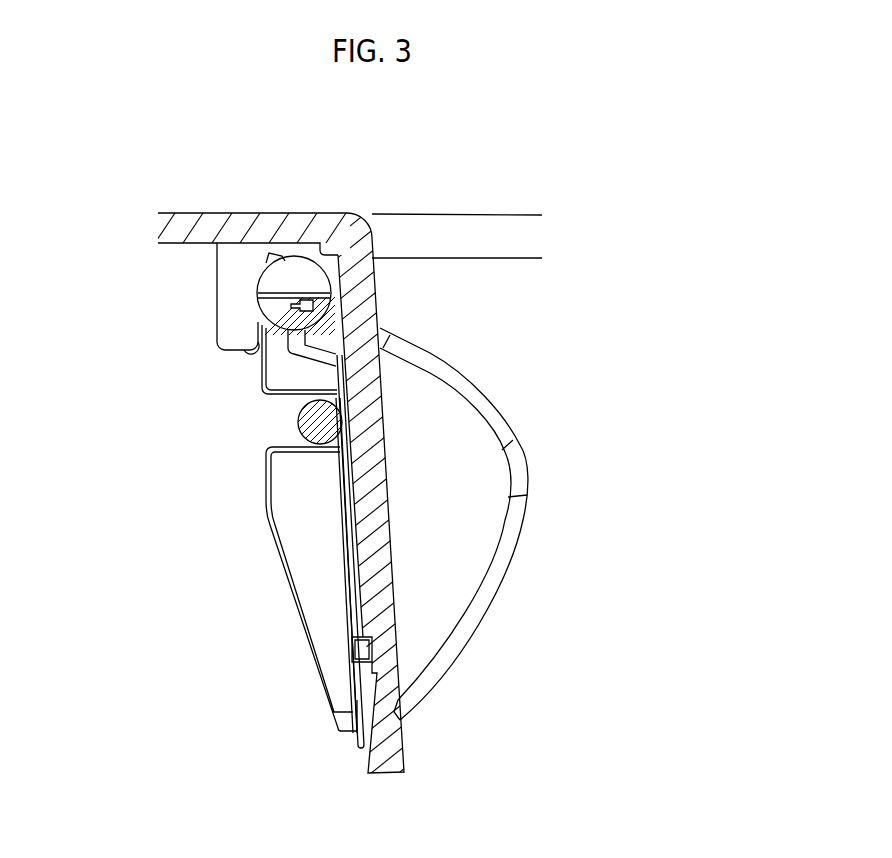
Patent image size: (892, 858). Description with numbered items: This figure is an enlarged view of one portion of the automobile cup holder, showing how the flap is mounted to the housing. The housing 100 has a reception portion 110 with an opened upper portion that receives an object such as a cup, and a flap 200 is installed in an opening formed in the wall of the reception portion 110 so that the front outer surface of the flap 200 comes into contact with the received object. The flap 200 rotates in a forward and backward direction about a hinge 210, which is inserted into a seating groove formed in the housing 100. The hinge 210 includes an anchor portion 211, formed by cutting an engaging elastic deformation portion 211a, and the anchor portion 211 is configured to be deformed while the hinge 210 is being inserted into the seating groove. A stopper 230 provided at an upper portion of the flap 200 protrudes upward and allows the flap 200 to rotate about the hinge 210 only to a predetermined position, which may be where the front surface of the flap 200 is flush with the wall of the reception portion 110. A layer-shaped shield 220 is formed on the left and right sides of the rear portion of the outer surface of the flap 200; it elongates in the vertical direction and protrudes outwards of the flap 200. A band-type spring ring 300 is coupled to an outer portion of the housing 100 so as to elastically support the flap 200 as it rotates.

The housing 100 is at (198, 220).
The reception portion 110 is at (490, 292).
The flap 200 is at (290, 517).
The hinge 210 is at (305, 272).
The anchor portion 211 is at (268, 293).
The engaging elastic deformation portion 211a is at (266, 333).
The shield 220 is at (352, 566).
The stopper 230 is at (270, 255).
The spring ring 300 is at (297, 422).